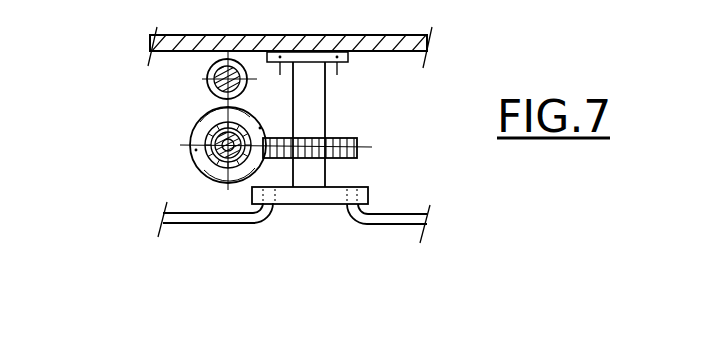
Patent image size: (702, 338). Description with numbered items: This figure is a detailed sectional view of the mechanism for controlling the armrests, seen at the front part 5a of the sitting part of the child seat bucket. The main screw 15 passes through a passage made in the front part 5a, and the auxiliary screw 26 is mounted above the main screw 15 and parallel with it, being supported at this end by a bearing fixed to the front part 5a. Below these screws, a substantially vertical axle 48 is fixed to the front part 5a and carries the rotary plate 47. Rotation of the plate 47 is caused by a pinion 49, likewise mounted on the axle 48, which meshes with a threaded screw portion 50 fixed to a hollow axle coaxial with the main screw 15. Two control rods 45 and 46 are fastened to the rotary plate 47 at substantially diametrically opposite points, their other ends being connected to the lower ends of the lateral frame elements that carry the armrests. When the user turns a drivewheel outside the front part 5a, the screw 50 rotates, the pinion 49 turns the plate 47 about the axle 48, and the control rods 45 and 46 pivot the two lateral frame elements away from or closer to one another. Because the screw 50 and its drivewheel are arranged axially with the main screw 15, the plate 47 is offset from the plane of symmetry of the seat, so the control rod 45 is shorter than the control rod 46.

The front part of the sitting part 5a is at (152, 47).
The auxiliary screw 26 is at (207, 78).
The main screw 15 is at (212, 135).
The threaded screw portion 50 is at (203, 162).
The control rod 45 is at (192, 222).
The control rod 46 is at (368, 221).
The rotary plate 47 is at (282, 205).
The axle 48 is at (310, 173).
The pinion 49 is at (357, 148).